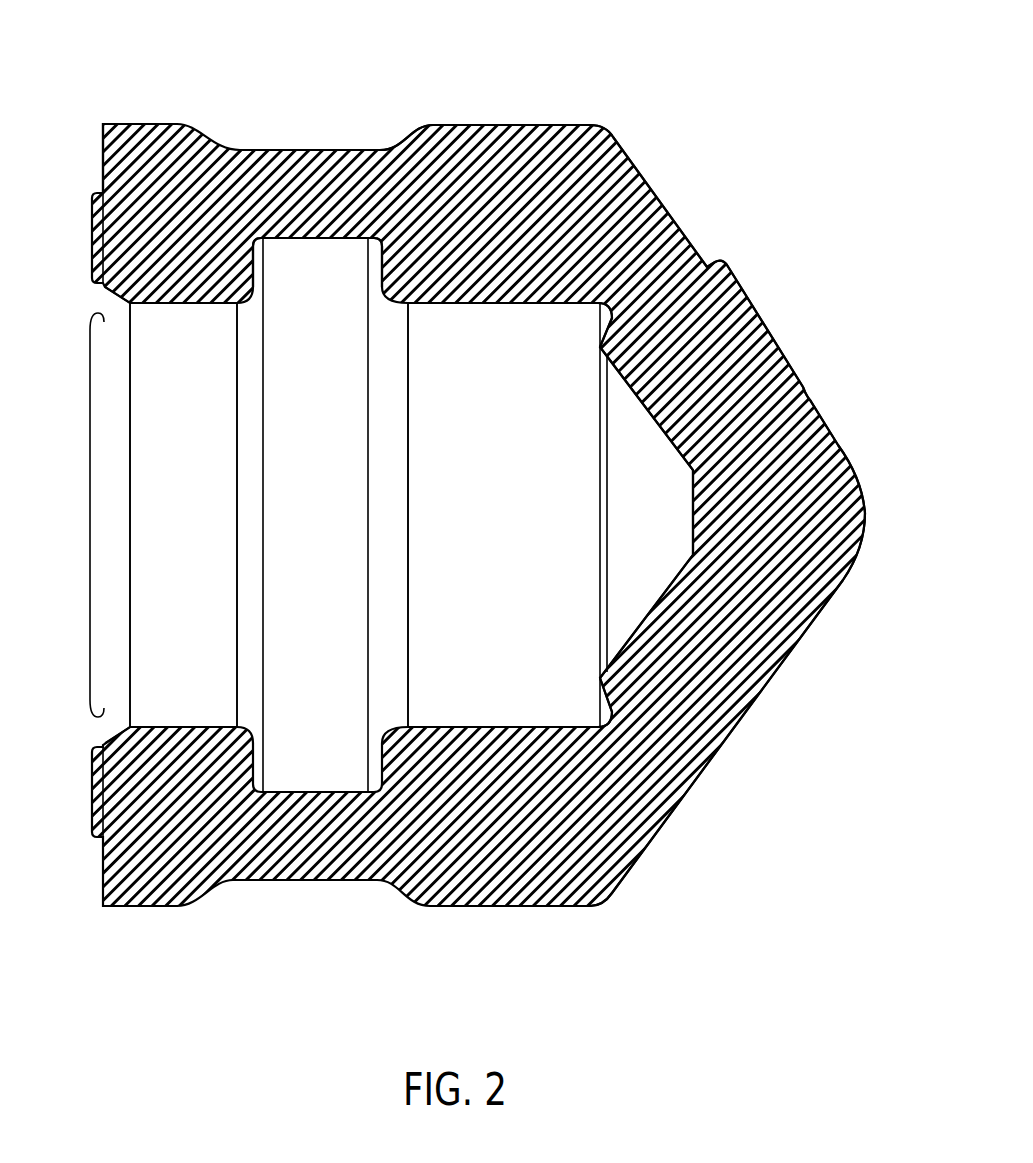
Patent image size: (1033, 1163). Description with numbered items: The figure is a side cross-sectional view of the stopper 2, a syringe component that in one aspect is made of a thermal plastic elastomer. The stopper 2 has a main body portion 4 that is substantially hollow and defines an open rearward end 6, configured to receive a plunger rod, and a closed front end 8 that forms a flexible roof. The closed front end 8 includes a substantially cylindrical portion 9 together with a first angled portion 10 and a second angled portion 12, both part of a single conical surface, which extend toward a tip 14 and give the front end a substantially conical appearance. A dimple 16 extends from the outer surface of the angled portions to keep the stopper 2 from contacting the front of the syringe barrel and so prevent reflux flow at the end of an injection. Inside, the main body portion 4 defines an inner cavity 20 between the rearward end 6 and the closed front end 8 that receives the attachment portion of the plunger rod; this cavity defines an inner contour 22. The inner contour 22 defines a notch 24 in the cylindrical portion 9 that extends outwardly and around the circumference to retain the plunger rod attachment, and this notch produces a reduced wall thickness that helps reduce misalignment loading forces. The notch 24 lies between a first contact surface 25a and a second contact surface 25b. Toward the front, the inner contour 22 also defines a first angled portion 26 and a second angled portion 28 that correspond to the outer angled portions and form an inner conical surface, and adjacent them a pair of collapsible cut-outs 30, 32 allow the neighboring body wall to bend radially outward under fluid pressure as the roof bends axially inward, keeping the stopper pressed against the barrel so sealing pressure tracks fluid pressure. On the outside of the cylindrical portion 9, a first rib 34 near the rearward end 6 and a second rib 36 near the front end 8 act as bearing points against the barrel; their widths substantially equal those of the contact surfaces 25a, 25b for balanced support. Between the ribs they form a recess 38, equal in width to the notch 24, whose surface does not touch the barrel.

The stopper 2 is at (794, 207).
The main body portion 4 is at (432, 162).
The open rearward end 6 is at (103, 292).
The closed front end 8 is at (840, 448).
The cylindrical portion 9 is at (500, 176).
The first angled portion 10 is at (665, 198).
The second angled portion 12 is at (668, 822).
The tip 14 is at (866, 522).
The dimple 16 is at (770, 316).
The inner cavity 20 is at (185, 531).
The inner contour 22 is at (170, 306).
The notch 24 is at (310, 242).
The first contact surface 25a is at (210, 306).
The second contact surface 25b is at (455, 305).
The first angled portion 26 is at (672, 448).
The second angled portion 28 is at (650, 604).
The collapsible cut-out 30 is at (600, 310).
The collapsible cut-out 32 is at (598, 720).
The first rib 34 is at (105, 122).
The second rib 36 is at (580, 122).
The recess 38 is at (278, 148).